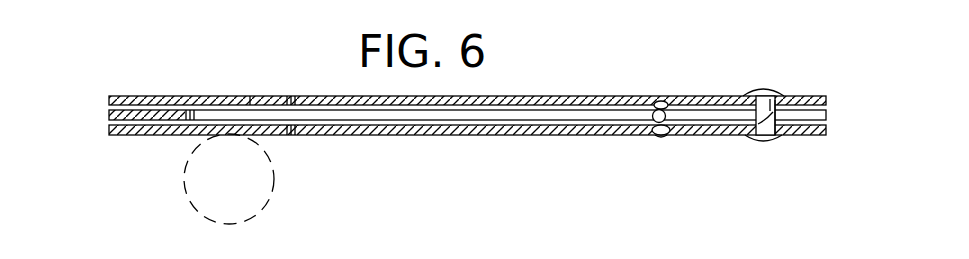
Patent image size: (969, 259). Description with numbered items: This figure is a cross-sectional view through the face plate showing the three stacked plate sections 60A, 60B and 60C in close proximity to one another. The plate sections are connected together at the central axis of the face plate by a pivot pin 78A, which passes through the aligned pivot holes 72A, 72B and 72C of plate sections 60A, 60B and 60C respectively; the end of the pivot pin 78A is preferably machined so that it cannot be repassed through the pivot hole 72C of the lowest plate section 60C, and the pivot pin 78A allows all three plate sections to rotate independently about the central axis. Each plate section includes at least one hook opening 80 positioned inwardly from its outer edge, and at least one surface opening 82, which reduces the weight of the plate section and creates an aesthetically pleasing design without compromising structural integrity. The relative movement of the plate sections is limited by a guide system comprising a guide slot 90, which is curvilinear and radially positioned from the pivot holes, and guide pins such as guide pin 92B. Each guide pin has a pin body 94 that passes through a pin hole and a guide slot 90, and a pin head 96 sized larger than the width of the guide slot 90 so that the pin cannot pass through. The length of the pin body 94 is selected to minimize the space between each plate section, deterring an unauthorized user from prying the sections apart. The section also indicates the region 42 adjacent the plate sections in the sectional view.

The plate section 60A is at (207, 97).
The plate section 60B is at (137, 114).
The plate section 60C is at (160, 136).
The hook opening 80 is at (257, 117).
The surface opening 82 is at (410, 130).
The guide slot 90 is at (560, 97).
The pin body 94 is at (650, 135).
The pin head 96 is at (665, 99).
The guide pin 92B is at (662, 143).
The pivot hole 72A is at (762, 96).
The pivot hole 72B is at (763, 138).
The pivot hole 72C is at (772, 138).
The pivot pin 78A is at (776, 93).
The ball 42 is at (272, 194).